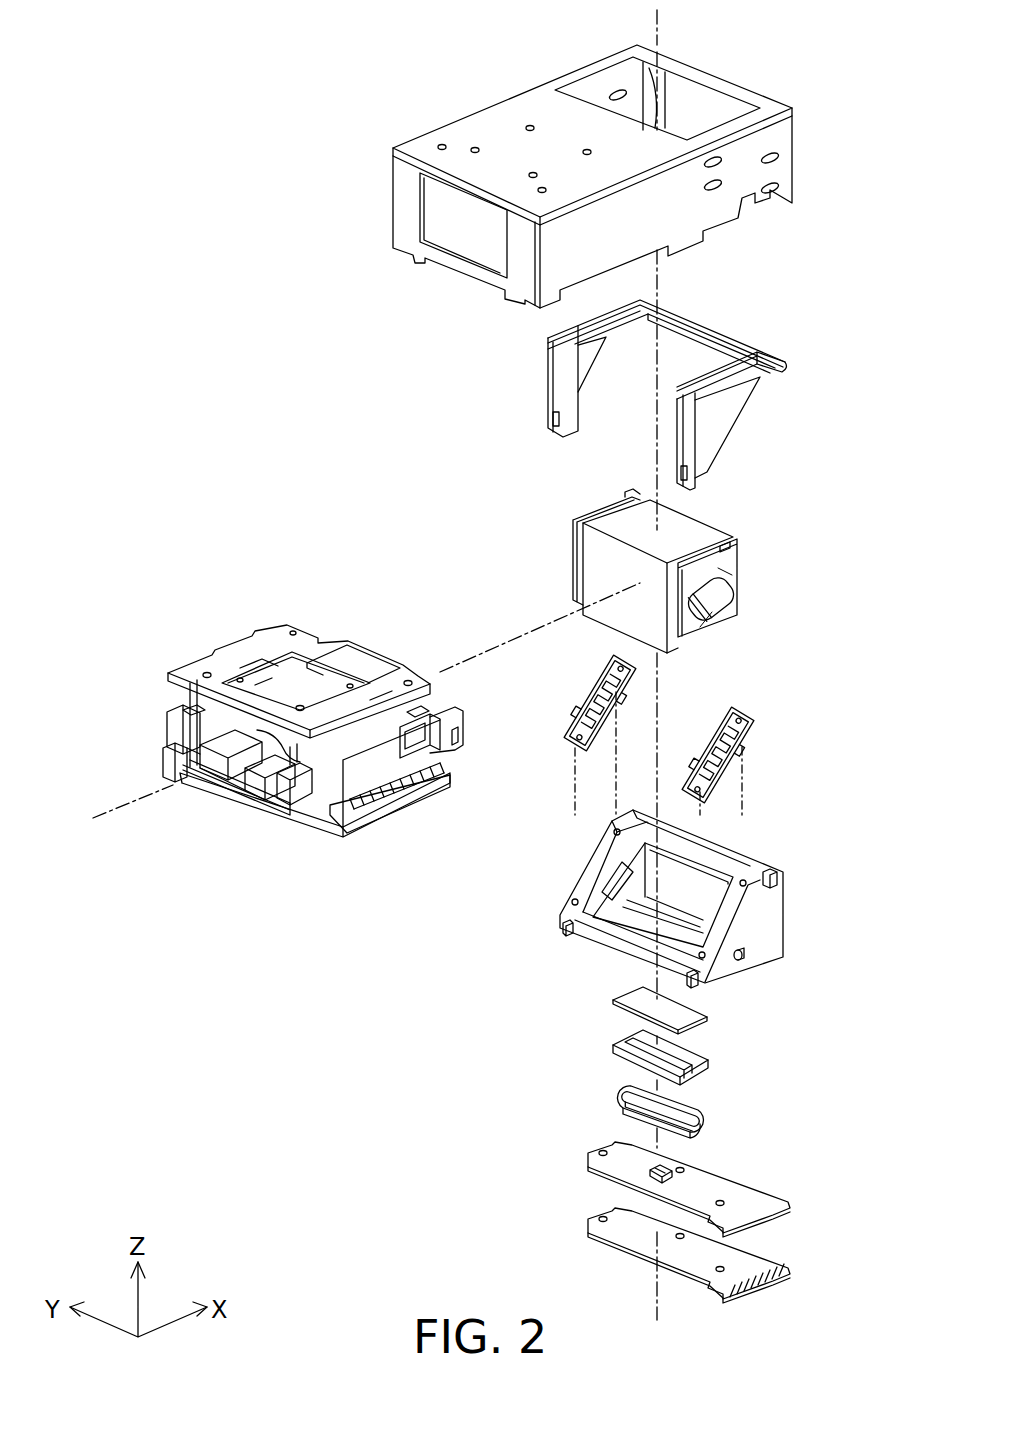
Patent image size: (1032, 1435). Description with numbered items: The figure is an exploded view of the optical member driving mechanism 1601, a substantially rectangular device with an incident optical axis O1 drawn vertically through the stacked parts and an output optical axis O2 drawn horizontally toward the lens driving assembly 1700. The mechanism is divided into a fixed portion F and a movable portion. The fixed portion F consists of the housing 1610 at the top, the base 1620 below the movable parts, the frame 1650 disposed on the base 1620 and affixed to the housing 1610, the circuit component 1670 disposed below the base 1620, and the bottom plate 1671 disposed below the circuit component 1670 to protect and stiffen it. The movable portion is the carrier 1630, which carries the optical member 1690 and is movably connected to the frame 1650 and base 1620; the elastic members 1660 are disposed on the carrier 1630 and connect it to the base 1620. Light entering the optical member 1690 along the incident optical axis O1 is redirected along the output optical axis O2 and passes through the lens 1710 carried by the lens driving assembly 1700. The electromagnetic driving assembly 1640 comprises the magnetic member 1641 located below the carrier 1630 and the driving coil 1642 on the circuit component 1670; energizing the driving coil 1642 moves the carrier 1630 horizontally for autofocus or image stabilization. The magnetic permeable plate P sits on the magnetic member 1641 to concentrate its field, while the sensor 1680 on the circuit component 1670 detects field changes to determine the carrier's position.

The optical member driving mechanism 1601 is at (167, 22).
The housing 1610 is at (765, 140).
The base 1620 is at (763, 923).
The carrier 1630 is at (723, 562).
The electromagnetic driving assembly 1640 is at (306, 1040).
The magnetic member 1641 is at (685, 1053).
The driving coil 1642 is at (687, 1110).
The frame 1650 is at (720, 338).
The elastic members 1660 is at (583, 702).
The circuit component 1670 is at (762, 1207).
The bottom plate 1671 is at (738, 1265).
The sensor 1680 is at (672, 1180).
The optical member 1690 is at (603, 567).
The lens driving assembly 1700 is at (172, 720).
The lens 1710 is at (350, 663).
The magnetic permeable plate P is at (677, 1015).
The fixed portion F is at (306, 353).
The incident optical axis O1 is at (659, 660).
The output optical axis O2 is at (347, 711).